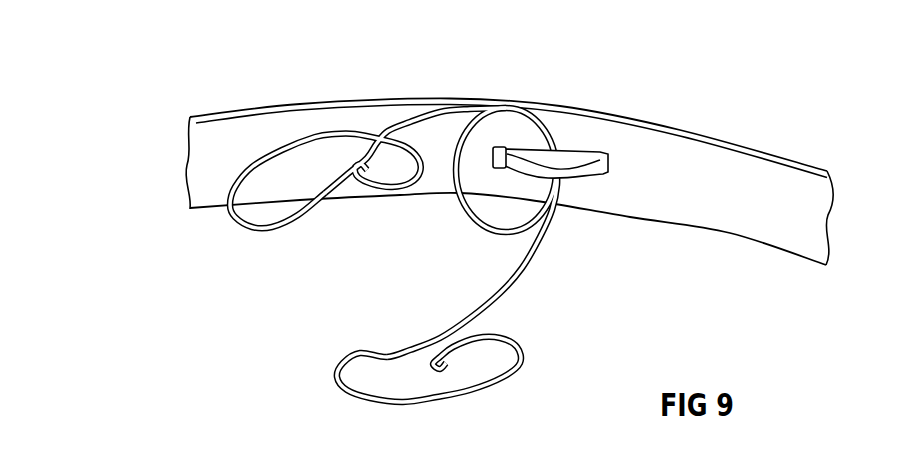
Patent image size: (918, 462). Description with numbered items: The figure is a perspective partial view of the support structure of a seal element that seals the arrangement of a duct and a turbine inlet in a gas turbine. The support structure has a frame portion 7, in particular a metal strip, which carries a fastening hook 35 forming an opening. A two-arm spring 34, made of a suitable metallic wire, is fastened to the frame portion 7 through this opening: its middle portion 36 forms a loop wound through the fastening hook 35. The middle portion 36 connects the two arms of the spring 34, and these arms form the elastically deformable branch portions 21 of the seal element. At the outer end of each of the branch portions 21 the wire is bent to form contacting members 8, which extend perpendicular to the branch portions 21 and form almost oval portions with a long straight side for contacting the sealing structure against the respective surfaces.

The frame portion 7 is at (696, 216).
The contacting members 8 is at (256, 228).
The branch portions 21 is at (389, 126).
The two-arm spring 34 is at (507, 284).
The fastening hook 35 is at (604, 157).
The middle portion 36 is at (518, 104).